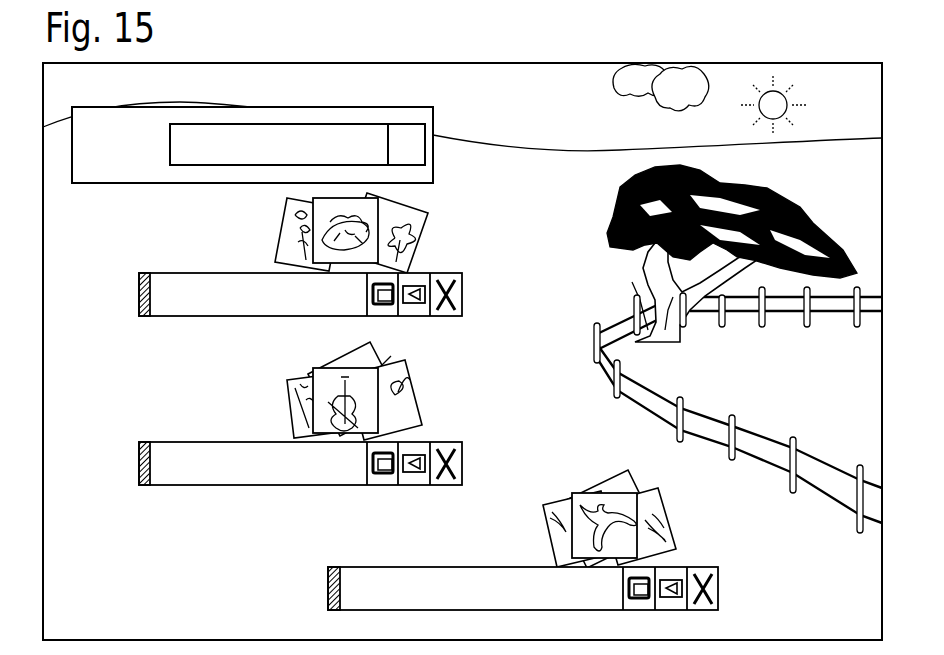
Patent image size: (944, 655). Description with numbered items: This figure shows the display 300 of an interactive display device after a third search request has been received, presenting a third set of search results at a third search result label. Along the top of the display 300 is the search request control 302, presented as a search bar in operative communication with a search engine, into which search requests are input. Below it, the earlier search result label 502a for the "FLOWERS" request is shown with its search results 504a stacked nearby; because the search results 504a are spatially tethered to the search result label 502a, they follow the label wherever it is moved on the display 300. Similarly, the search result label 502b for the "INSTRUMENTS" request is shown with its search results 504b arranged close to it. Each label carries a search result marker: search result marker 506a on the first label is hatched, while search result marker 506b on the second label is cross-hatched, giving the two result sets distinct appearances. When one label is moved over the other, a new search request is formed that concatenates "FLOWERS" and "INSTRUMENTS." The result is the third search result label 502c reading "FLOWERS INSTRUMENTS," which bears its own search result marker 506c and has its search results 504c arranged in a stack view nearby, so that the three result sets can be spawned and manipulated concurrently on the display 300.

The display 300 is at (829, 61).
The search request control 302 is at (378, 106).
The search result label 502a is at (227, 257).
The search result label 502b is at (227, 427).
The search result label 502c is at (484, 549).
The search results 504a is at (267, 218).
The search results 504b is at (436, 394).
The search results 504c is at (715, 500).
The search result marker 506a is at (137, 300).
The search result marker 506b is at (137, 469).
The search result marker 506c is at (326, 588).